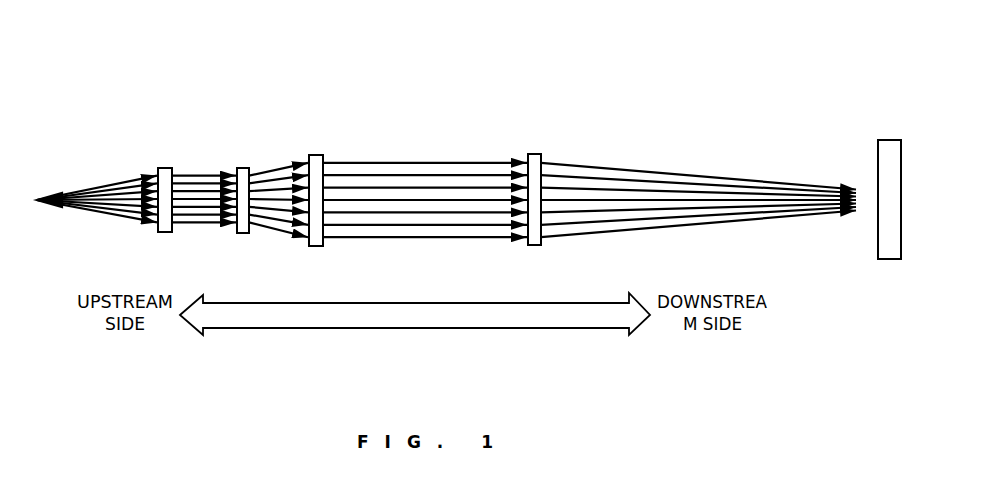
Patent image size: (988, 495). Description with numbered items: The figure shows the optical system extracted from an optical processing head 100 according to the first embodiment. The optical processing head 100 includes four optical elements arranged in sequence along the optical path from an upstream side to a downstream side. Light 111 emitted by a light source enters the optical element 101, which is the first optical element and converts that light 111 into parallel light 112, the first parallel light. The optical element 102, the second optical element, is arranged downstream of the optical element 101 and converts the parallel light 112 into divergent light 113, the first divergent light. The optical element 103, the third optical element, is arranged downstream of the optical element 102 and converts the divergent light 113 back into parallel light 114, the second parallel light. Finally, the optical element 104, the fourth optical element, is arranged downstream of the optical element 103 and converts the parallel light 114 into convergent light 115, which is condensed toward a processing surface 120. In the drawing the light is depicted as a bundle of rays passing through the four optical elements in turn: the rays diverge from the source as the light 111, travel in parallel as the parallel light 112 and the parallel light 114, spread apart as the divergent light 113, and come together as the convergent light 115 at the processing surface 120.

The optical processing head 100 is at (117, 80).
The optical element 101 is at (164, 168).
The optical element 102 is at (242, 168).
The optical element 103 is at (317, 155).
The optical element 104 is at (533, 154).
The light 111 is at (102, 183).
The parallel light 112 is at (204, 170).
The divergent light 113 is at (275, 166).
The parallel light 114 is at (421, 162).
The convergent light 115 is at (644, 178).
The processing surface 120 is at (878, 150).